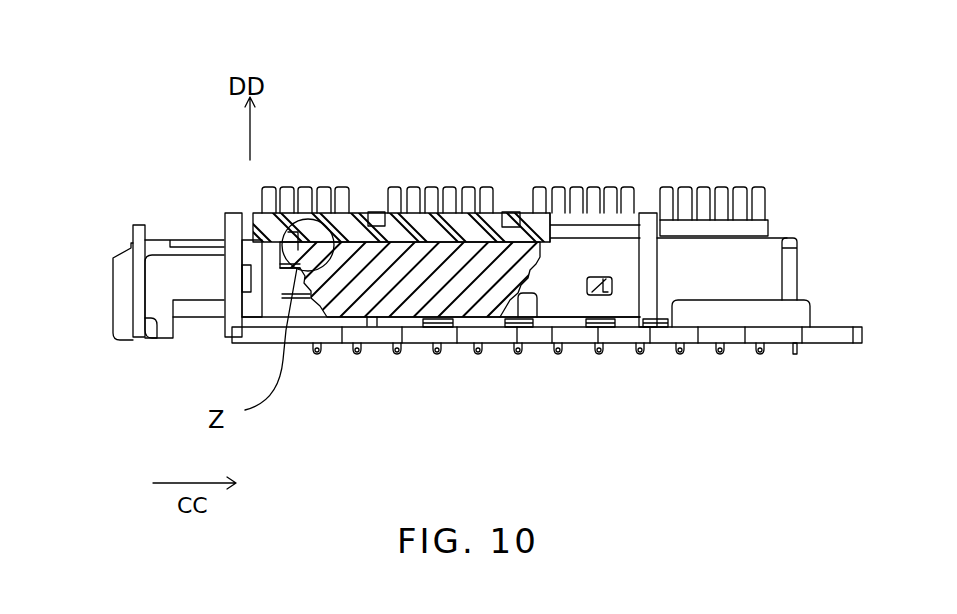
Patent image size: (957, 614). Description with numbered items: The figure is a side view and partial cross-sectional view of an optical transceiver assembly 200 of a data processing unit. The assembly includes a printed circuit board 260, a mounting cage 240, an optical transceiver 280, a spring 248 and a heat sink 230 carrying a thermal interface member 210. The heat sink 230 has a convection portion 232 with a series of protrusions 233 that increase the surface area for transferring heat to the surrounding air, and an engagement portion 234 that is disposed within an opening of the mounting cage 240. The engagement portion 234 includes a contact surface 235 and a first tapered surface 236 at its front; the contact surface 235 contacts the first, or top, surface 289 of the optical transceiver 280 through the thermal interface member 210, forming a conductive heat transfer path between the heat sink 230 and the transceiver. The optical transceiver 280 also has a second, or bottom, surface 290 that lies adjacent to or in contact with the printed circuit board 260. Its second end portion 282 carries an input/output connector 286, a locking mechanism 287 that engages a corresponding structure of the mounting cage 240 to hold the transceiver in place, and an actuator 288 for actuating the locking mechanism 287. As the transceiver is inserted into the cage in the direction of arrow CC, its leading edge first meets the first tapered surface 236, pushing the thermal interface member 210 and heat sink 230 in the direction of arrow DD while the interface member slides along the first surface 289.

The optical transceiver assembly 200 is at (267, 42).
The thermal interface member 210 is at (351, 213).
The heat sink 230 is at (696, 167).
The convection portion 232 is at (608, 198).
The protrusions 233 is at (573, 188).
The engagement portion 234 is at (381, 234).
The contact surface 235 is at (435, 242).
The first tapered surface 236 is at (300, 230).
The mounting cage 240 is at (745, 257).
The spring 248 is at (625, 285).
The printed circuit board 260 is at (717, 333).
The optical transceiver 280 is at (473, 293).
The second end portion 282 is at (170, 240).
The input/output connector 286 is at (110, 291).
The locking mechanism 287 is at (192, 291).
The actuator 288 is at (133, 226).
The first surface 289 is at (390, 243).
The second surface 290 is at (398, 245).